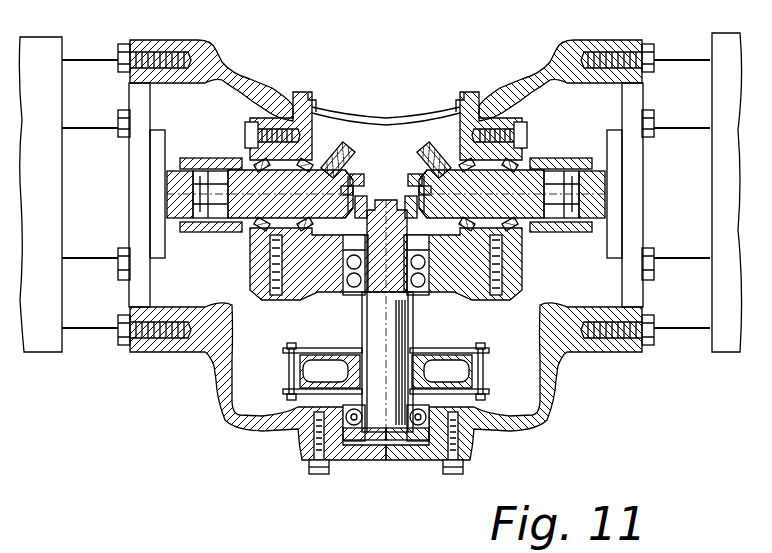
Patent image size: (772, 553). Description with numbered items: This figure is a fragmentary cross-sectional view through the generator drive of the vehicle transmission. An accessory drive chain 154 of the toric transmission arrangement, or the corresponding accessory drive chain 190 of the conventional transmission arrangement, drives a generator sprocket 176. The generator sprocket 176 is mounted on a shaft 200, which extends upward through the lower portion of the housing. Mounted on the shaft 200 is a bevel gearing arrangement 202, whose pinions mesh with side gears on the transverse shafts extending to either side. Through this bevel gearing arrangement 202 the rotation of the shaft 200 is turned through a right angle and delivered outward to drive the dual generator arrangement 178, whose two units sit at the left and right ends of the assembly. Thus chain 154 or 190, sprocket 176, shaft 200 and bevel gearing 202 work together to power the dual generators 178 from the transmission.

The dual generator arrangement 178 is at (253, 68).
The bevel gearing arrangement 202 is at (421, 148).
The shaft 200 is at (376, 312).
The generator sprocket 176 is at (467, 355).
The accessory drive chain 154 is at (475, 351).
The accessory drive chain 190 is at (475, 351).